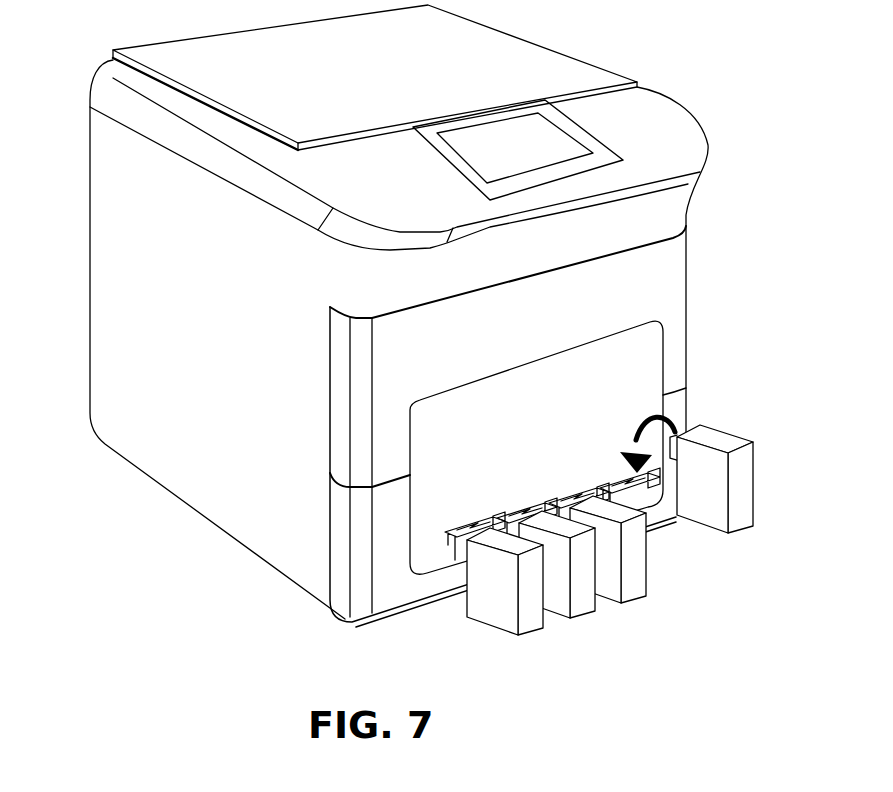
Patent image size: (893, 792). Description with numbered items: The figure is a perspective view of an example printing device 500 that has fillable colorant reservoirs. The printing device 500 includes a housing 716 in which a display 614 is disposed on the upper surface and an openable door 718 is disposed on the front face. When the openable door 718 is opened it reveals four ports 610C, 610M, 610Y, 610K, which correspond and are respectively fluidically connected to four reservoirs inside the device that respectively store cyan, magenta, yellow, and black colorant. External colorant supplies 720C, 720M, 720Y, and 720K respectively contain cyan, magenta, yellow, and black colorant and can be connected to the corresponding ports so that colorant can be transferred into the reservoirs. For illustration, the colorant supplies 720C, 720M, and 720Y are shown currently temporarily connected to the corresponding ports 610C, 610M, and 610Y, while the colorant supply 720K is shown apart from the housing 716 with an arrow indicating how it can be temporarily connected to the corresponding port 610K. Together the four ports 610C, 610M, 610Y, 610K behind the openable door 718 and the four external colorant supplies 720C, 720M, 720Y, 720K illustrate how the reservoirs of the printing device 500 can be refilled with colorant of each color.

The printing device 500 is at (120, 659).
The housing 716 is at (102, 270).
The display 614 is at (599, 141).
The openable door 718 is at (520, 375).
The port 610C is at (473, 520).
The port 610M is at (527, 513).
The port 610Y is at (570, 487).
The port 610K is at (623, 473).
The external colorant supply 720C is at (520, 637).
The external colorant supply 720M is at (577, 620).
The external colorant supply 720Y is at (632, 605).
The external colorant supply 720K is at (735, 532).